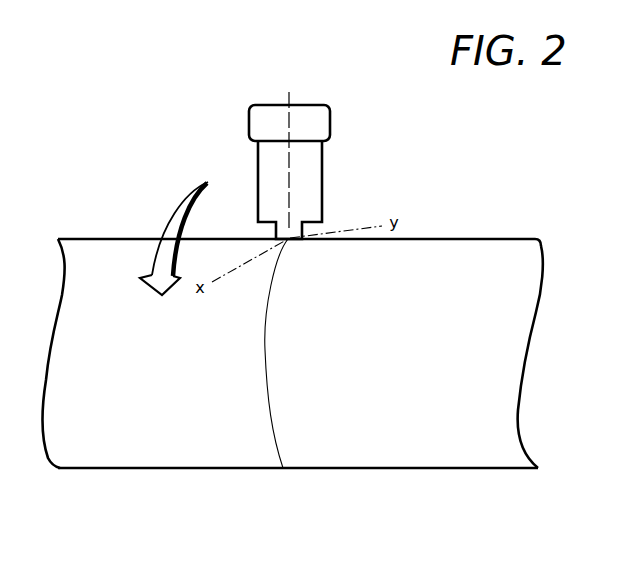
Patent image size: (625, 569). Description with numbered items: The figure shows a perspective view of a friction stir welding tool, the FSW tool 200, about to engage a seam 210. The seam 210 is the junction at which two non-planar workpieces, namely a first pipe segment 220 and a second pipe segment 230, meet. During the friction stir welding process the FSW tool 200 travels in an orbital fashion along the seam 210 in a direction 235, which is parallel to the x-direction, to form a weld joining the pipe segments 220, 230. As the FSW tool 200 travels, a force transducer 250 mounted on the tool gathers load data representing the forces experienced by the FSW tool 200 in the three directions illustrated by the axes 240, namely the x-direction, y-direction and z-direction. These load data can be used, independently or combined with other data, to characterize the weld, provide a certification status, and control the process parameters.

The FSW tool 200 is at (295, 153).
The seam 210 is at (275, 442).
The pipe segment 220 is at (485, 239).
The pipe segment 230 is at (182, 468).
The direction 235 is at (165, 212).
The axes 240 is at (287, 188).
The force transducer 250 is at (330, 125).